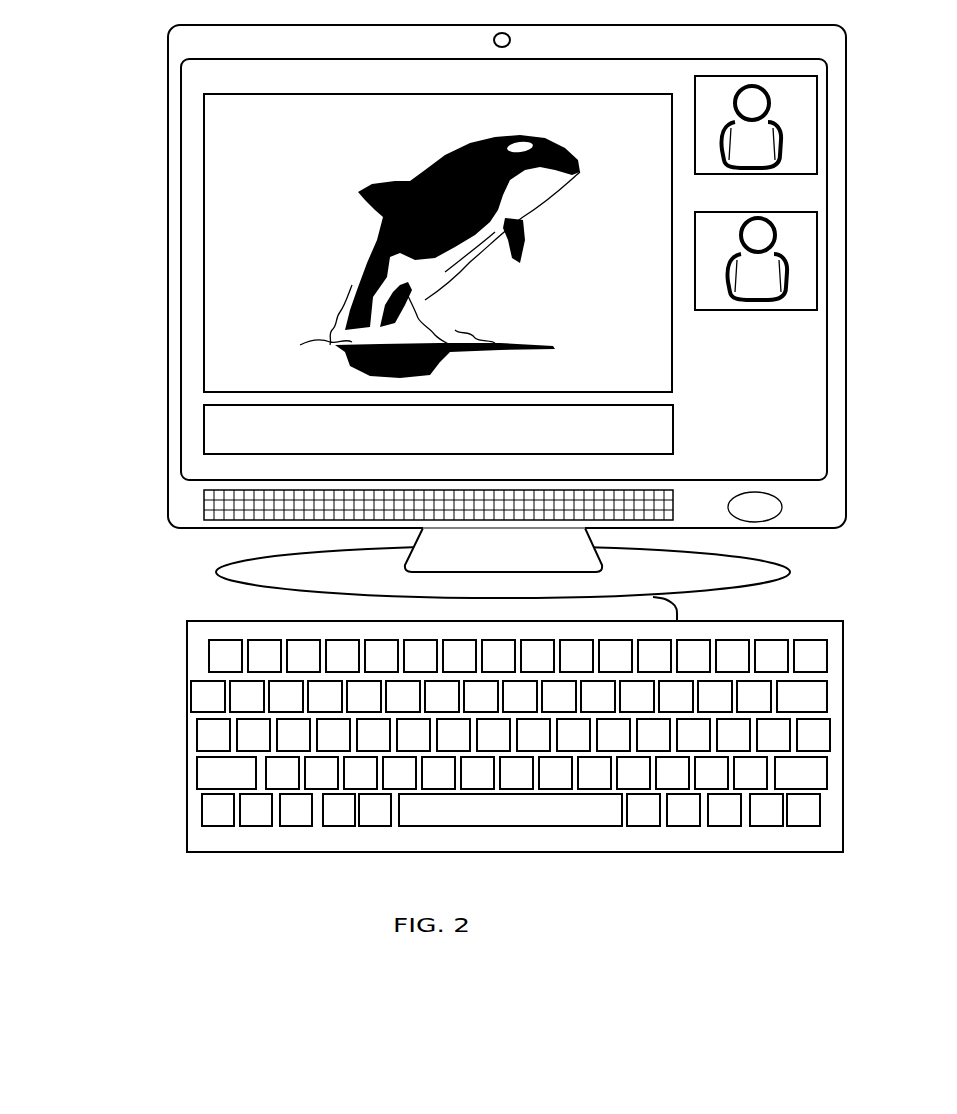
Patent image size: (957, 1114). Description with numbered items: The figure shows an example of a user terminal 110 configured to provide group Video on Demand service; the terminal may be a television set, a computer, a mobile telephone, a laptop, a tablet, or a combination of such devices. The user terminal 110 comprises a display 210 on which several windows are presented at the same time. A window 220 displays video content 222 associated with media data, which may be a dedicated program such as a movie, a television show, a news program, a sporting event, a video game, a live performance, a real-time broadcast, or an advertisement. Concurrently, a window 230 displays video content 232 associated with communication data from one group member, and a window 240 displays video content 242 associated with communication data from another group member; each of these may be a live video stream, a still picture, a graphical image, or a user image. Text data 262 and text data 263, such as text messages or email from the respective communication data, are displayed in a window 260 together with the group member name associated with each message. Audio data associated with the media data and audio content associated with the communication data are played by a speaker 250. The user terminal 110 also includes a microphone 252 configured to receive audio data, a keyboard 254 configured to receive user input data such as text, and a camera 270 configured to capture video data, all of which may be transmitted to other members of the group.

The user terminal 110 is at (137, 296).
The display 210 is at (260, 86).
The window 220 is at (263, 130).
The video content 222 is at (387, 178).
The window 230 is at (733, 100).
The video content 232 is at (768, 151).
The window 240 is at (733, 236).
The video content 242 is at (773, 286).
The speaker 250 is at (656, 516).
The microphone 252 is at (771, 516).
The keyboard 254 is at (523, 846).
The window 260 is at (263, 438).
The text data 262 is at (643, 413).
The text data 263 is at (640, 442).
The camera 270 is at (502, 32).